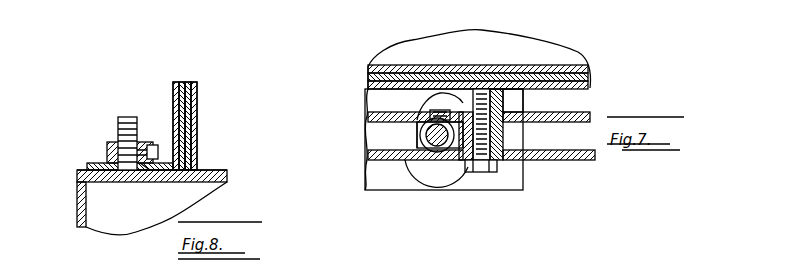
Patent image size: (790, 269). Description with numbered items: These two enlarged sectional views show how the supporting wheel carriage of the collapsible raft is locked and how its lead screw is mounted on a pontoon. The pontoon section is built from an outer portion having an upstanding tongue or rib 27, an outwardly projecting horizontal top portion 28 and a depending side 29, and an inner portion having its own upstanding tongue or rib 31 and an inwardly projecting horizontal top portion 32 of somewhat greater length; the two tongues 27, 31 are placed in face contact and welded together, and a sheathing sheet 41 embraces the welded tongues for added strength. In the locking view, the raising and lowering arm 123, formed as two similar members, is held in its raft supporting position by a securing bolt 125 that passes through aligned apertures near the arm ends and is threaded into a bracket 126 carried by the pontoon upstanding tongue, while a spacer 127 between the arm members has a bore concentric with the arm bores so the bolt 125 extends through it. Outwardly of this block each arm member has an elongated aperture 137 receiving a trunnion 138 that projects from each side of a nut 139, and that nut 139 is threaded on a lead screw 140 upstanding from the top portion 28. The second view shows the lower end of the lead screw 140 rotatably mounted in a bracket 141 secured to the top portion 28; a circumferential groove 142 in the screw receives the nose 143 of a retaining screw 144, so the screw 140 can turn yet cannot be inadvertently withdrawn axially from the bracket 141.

In FIG. 8, the upstanding tongue or rib 27 is at (185, 85).
In FIG. 7, the upstanding tongue or rib 27 is at (592, 81).
In FIG. 8, the horizontal top portion 28 is at (78, 172).
In FIG. 7, the horizontal top portion 28 is at (465, 180).
In FIG. 8, the depending side 29 is at (80, 205).
In FIG. 8, the upstanding tongue or rib 31 is at (197, 106).
In FIG. 7, the upstanding tongue or rib 31 is at (584, 83).
In FIG. 8, the horizontal top portion 32 is at (208, 172).
In FIG. 7, the horizontal top portion 32 is at (496, 14).
In FIG. 8, the sheathing sheet 41 is at (197, 121).
In FIG. 7, the sheathing sheet 41 is at (546, 88).
In FIG. 7, the raising and lowering arm 123 is at (592, 160).
In FIG. 7, the securing bolt 125 is at (480, 166).
In FIG. 7, the bracket 126 is at (521, 76).
In FIG. 7, the spacer 127 is at (530, 140).
In FIG. 7, the elongated aperture 137 is at (410, 138).
In FIG. 7, the trunnion 138 is at (430, 114).
In FIG. 7, the nut 139 is at (437, 150).
In FIG. 8, the lead screw 140 is at (128, 118).
In FIG. 7, the lead screw 140 is at (434, 162).
In FIG. 8, the bracket 141 is at (110, 150).
In FIG. 7, the bracket 141 is at (406, 125).
In FIG. 8, the circumferential groove 142 is at (99, 178).
In FIG. 8, the nose 143 is at (145, 148).
In FIG. 8, the retaining screw 144 is at (145, 175).